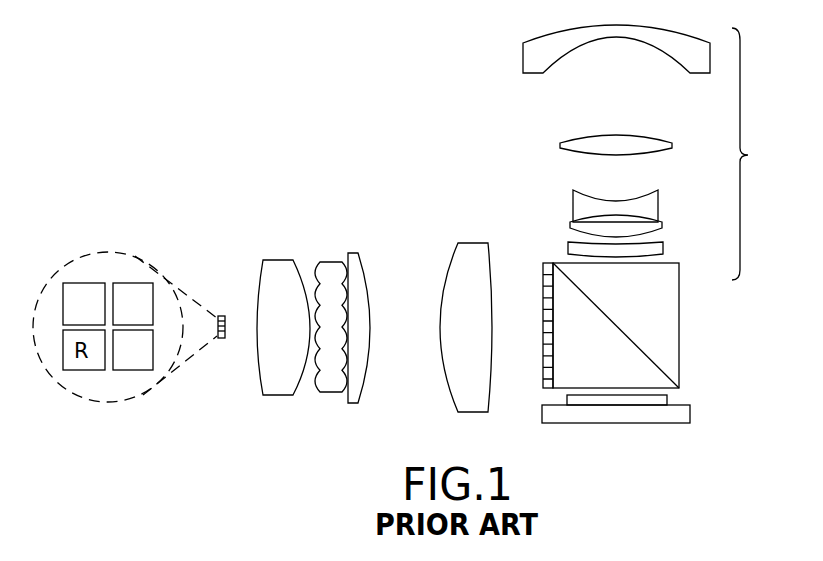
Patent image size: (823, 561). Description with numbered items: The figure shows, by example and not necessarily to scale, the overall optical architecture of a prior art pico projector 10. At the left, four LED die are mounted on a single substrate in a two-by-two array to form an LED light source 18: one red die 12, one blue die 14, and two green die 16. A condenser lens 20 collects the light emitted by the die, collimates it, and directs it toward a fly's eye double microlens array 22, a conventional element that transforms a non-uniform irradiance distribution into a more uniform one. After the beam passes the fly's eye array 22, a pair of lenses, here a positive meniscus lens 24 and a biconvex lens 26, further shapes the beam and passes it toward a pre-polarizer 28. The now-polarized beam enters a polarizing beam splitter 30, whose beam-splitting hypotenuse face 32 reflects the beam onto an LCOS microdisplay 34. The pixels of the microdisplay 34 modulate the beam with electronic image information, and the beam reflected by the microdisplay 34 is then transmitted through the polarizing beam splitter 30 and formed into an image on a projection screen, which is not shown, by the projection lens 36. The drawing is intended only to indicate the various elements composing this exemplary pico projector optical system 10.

The pico projector 10 is at (340, 80).
The red LED die 12 is at (76, 363).
The blue LED die 14 is at (145, 295).
The green LED die 16 is at (72, 290).
The LED light source 18 is at (221, 318).
The condenser lens 20 is at (283, 275).
The fly's eye double microlens array 22 is at (328, 277).
The positive meniscus lens 24 is at (357, 272).
The biconvex lens 26 is at (472, 260).
The pre-polarizer 28 is at (553, 265).
The polarizing beam splitter 30 is at (662, 293).
The beam-splitting hypotenuse face 32 is at (652, 358).
The LCOS microdisplay 34 is at (655, 402).
The projection lens 36 is at (650, 152).